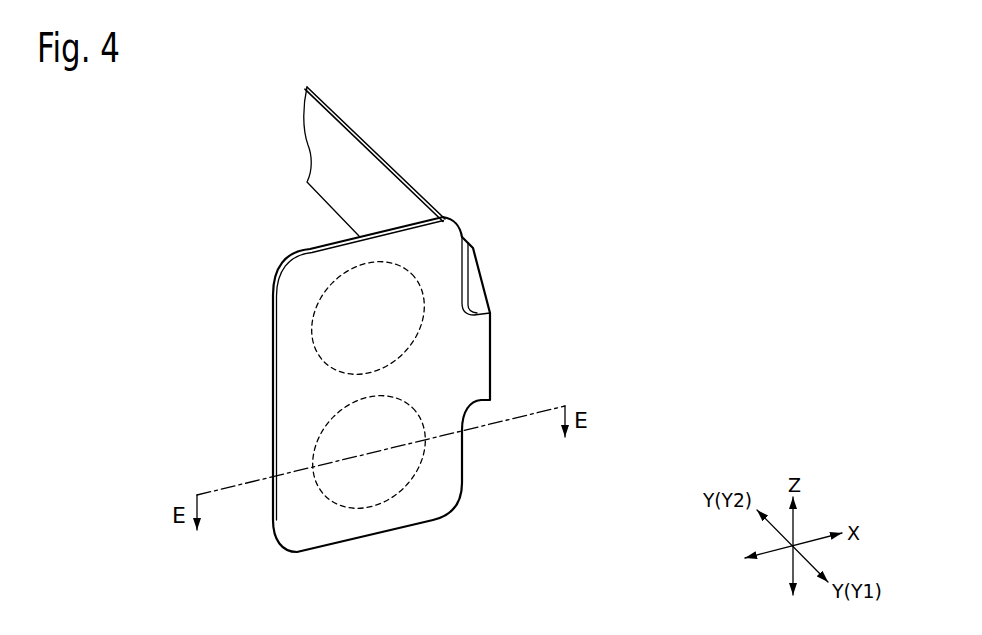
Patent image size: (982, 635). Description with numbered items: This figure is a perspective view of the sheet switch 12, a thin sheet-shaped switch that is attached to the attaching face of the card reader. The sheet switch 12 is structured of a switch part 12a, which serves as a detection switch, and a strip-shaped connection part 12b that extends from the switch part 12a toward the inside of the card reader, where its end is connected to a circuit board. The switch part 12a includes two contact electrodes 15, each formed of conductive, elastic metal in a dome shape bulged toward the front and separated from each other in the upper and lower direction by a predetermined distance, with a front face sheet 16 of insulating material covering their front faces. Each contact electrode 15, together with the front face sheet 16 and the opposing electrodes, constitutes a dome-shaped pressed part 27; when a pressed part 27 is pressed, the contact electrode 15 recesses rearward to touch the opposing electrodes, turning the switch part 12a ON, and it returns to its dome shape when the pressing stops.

The sheet switch 12 is at (396, 345).
The switch part 12a is at (272, 322).
The connection part 12b is at (370, 145).
The contact electrode 15 is at (331, 287).
The front face sheet 16 is at (449, 263).
The pressed part 27 is at (293, 348).